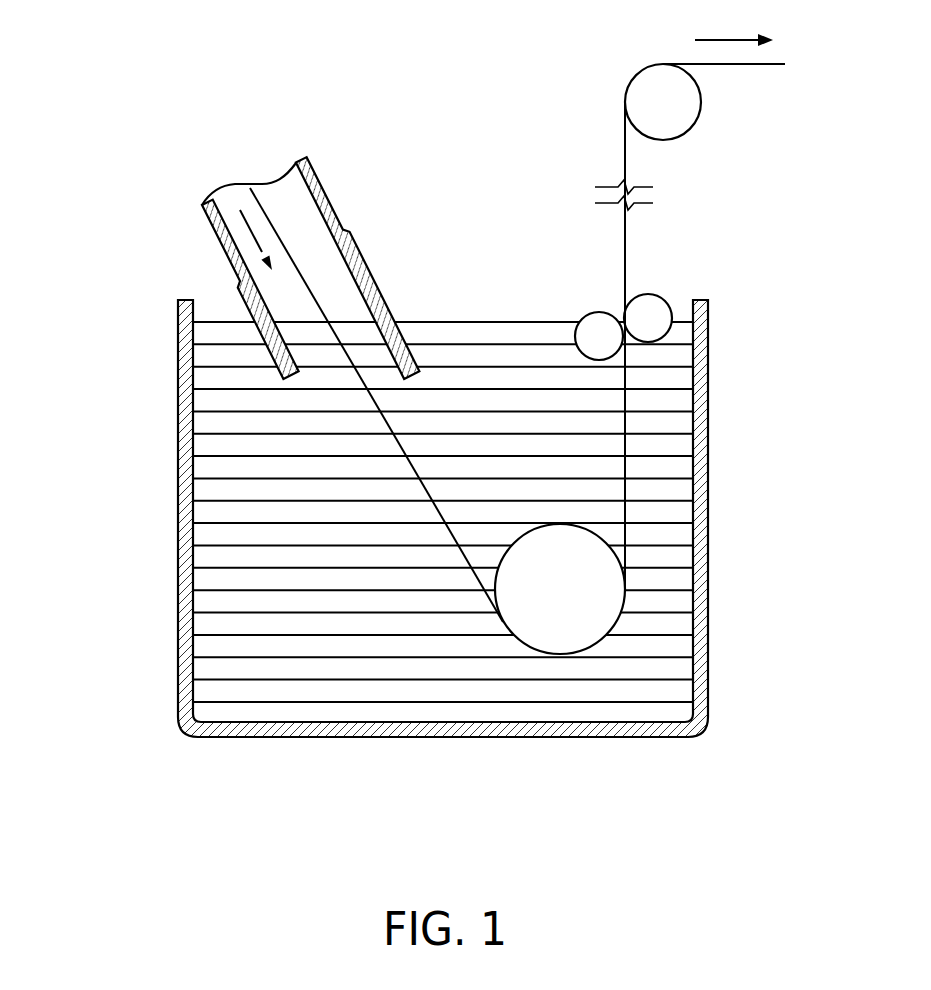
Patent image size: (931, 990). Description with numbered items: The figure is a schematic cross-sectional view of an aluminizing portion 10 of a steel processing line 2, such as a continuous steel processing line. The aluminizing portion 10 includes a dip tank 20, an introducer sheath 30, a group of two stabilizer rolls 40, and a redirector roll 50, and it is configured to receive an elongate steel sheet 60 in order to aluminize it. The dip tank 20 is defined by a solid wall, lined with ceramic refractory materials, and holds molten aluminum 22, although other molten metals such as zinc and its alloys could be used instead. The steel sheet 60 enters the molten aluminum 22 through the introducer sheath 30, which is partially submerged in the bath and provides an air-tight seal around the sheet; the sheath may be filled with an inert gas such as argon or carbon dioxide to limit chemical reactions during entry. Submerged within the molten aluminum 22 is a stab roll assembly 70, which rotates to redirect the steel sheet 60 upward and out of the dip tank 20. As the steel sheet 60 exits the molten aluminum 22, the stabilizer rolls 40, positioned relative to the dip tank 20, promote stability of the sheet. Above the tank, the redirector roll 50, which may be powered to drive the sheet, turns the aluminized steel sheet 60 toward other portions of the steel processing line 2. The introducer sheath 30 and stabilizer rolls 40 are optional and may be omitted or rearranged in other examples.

The steel processing line 2 is at (436, 407).
The aluminizing portion 10 is at (292, 276).
The dip tank 20 is at (178, 302).
The molten aluminum 22 is at (228, 375).
The introducer sheath 30 is at (362, 272).
The stabilizer rolls 40 is at (670, 305).
The redirector roll 50 is at (697, 123).
The steel sheet 60 is at (262, 214).
The stab roll assembly 70 is at (512, 616).